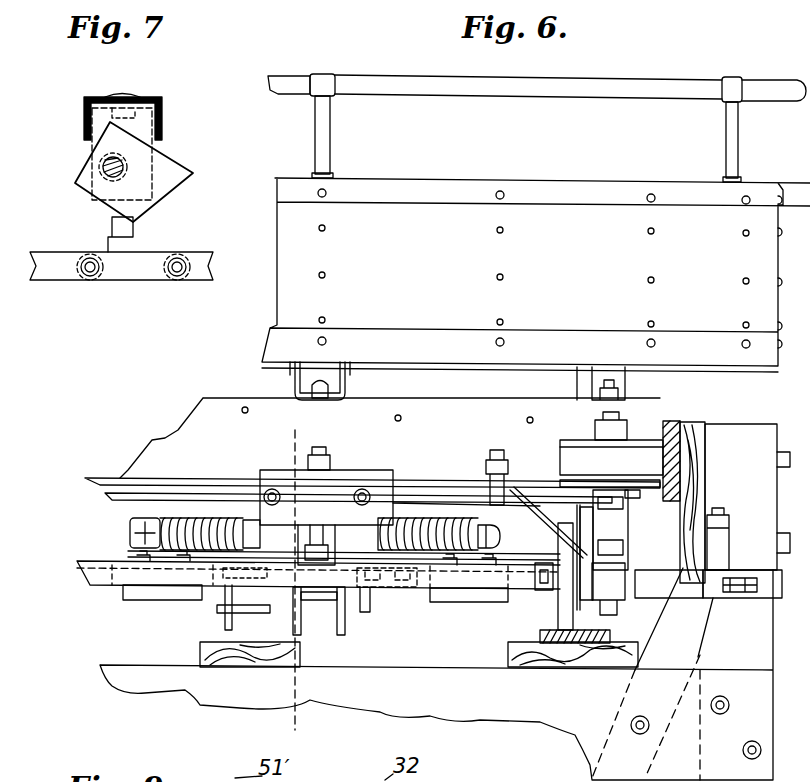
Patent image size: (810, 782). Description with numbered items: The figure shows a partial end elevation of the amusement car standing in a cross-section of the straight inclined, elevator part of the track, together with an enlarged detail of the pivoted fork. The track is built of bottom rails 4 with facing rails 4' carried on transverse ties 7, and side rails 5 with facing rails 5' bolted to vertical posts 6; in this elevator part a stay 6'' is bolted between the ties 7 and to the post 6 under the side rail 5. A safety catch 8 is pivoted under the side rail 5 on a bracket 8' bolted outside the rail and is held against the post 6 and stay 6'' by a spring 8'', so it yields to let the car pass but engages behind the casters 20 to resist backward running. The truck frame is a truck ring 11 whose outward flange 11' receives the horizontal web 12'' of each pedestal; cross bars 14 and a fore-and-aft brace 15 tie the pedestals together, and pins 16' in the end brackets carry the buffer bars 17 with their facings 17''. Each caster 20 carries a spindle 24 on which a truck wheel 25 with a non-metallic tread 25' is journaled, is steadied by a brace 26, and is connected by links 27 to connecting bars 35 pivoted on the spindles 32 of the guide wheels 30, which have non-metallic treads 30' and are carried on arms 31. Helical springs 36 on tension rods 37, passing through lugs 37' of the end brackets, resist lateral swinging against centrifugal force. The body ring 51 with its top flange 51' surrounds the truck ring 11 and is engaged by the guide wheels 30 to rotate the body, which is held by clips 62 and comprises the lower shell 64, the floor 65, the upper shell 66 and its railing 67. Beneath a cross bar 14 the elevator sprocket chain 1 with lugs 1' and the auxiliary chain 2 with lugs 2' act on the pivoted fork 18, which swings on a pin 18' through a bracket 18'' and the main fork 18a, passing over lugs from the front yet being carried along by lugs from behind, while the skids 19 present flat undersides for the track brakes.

In FIG. 6, the sprocket chain 1 is at (250, 673).
In FIG. 6, the lugs 1' is at (228, 677).
In FIG. 7, the auxiliary chain 2 is at (121, 249).
In FIG. 7, the lugs 2' is at (95, 234).
In FIG. 6, the bottom rails 4 is at (575, 681).
In FIG. 6, the facing rails 4' is at (538, 600).
In FIG. 6, the side rails 5 is at (681, 489).
In FIG. 6, the facing rails 5' is at (699, 437).
In FIG. 6, the vertical posts 6 is at (747, 497).
In FIG. 6, the stay 6'' is at (652, 674).
In FIG. 6, the transverse ties 7 is at (384, 700).
In FIG. 6, the safety catches 8 is at (680, 614).
In FIG. 6, the bracket 8' is at (732, 539).
In FIG. 6, the spring 8'' is at (742, 606).
In FIG. 6, the truck ring 11 is at (327, 506).
In FIG. 6, the horizontal flange 11' is at (376, 521).
In FIG. 6, the horizontal web 12'' is at (548, 505).
In FIG. 7, the cross bars 14 is at (150, 103).
In FIG. 6, the cross bars 14 is at (395, 588).
In FIG. 6, the fore-and-aft brace 15 is at (303, 540).
In FIG. 6, the pins 16' is at (410, 483).
In FIG. 6, the buffer bars 17 is at (353, 481).
In FIG. 6, the facings 17'' is at (381, 486).
In FIG. 7, the pivoted fork 18 is at (148, 172).
In FIG. 6, the pivoted fork 18 is at (334, 625).
In FIG. 7, the pin 18' is at (81, 167).
In FIG. 6, the pin 18' is at (319, 620).
In FIG. 7, the bracket 18'' is at (181, 121).
In FIG. 6, the bracket 18'' is at (406, 626).
In FIG. 6, the main fork 18a is at (222, 596).
In FIG. 6, the skids 19 is at (133, 592).
In FIG. 6, the casters 20 is at (618, 601).
In FIG. 6, the spindle 24 is at (633, 567).
In FIG. 6, the truck wheel 25 is at (573, 680).
In FIG. 6, the non-metallic treads 25' is at (594, 693).
In FIG. 6, the brace 26 is at (604, 545).
In FIG. 6, the links 27 is at (535, 520).
In FIG. 6, the guide wheels 30 is at (627, 439).
In FIG. 6, the non-metallic treads 30' is at (571, 432).
In FIG. 6, the arms 31 is at (630, 492).
In FIG. 6, the spindles 32 is at (617, 414).
In FIG. 6, the connecting bars 35 is at (95, 478).
In FIG. 6, the helical springs 36 is at (190, 520).
In FIG. 6, the tension rods 37 is at (264, 500).
In FIG. 6, the lugs 37' is at (369, 425).
In FIG. 6, the body ring 51 is at (390, 435).
In FIG. 6, the flange 51' is at (208, 379).
In FIG. 6, the clips 62 is at (345, 385).
In FIG. 6, the lower shell 64 is at (577, 372).
In FIG. 6, the floor 65 is at (127, 552).
In FIG. 6, the upper shell 66 is at (536, 272).
In FIG. 6, the railing 67 is at (620, 92).